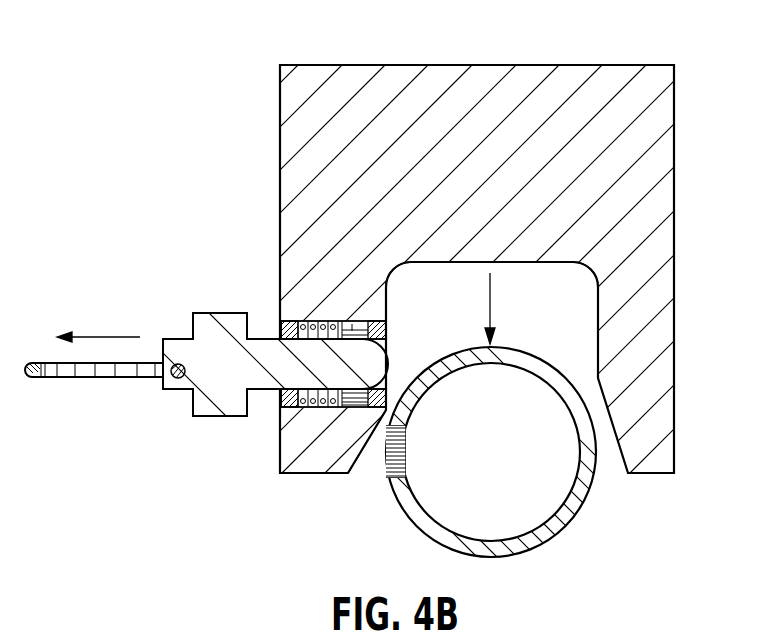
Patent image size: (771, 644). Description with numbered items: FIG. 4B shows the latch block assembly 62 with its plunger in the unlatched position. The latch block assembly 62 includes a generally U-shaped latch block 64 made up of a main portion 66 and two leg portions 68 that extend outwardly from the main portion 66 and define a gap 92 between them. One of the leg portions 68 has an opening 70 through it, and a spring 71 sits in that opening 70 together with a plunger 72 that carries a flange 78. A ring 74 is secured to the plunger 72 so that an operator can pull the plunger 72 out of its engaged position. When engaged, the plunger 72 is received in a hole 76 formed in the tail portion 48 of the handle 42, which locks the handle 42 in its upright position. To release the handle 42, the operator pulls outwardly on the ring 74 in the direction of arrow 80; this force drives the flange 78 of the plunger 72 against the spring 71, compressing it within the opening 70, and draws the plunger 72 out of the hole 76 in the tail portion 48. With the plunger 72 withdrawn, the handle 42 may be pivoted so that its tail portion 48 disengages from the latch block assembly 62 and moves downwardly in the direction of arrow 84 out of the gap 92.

The latch block assembly 62 is at (158, 127).
The main portion 66 is at (452, 66).
The latch block 64 is at (279, 197).
The leg portions 68 is at (311, 463).
The gap 92 is at (572, 288).
The flange 78 is at (353, 398).
The arrow 84 is at (496, 294).
The handle 42 is at (505, 561).
The tail portion 48 is at (578, 513).
The hole 76 is at (405, 468).
The plunger 72 is at (222, 416).
The ring 74 is at (110, 376).
The arrow 80 is at (108, 334).
The opening 70 is at (352, 321).
The spring 71 is at (353, 396).